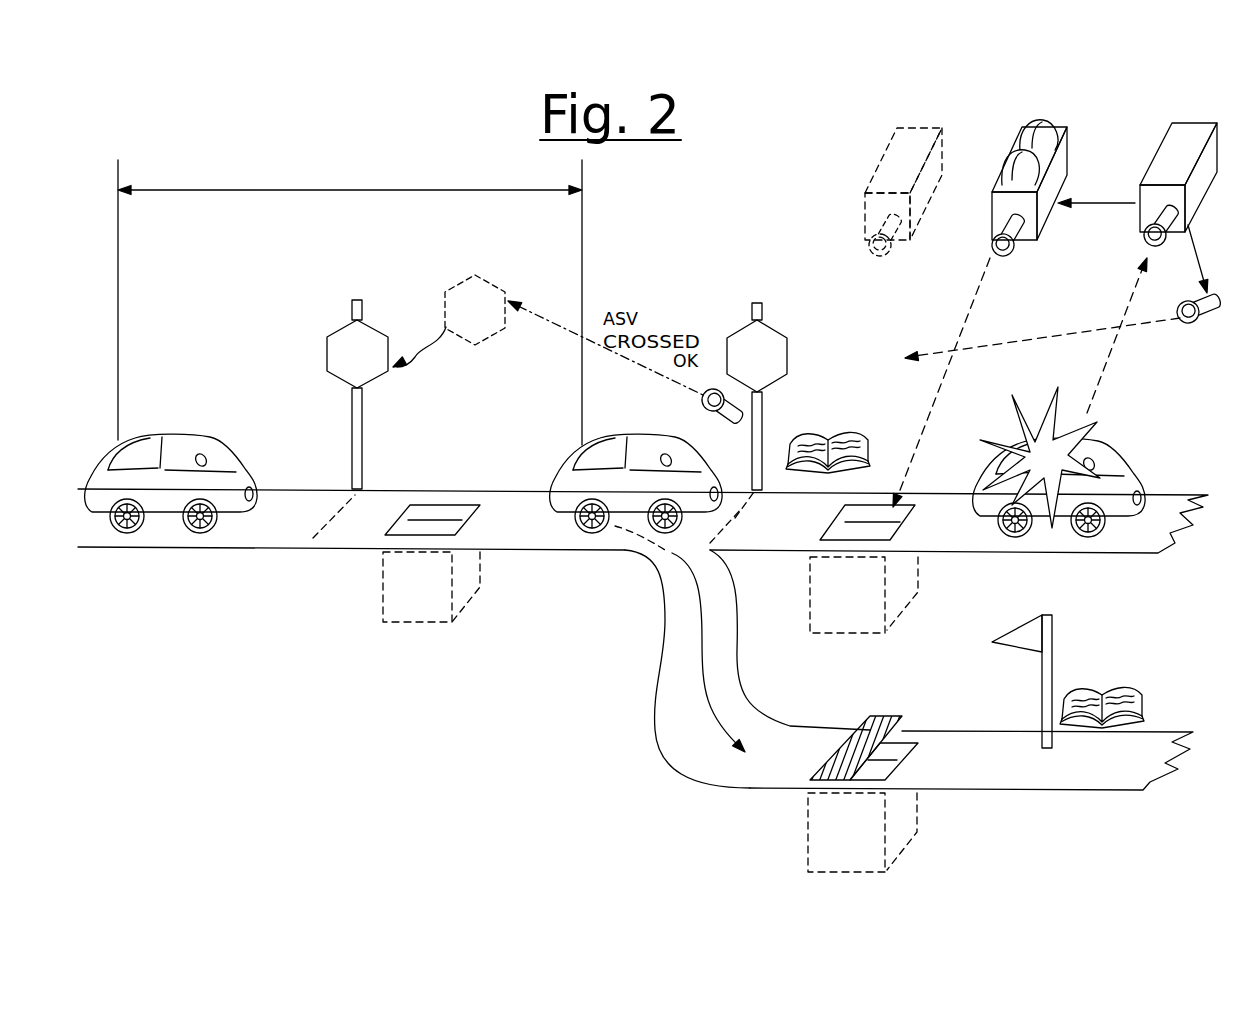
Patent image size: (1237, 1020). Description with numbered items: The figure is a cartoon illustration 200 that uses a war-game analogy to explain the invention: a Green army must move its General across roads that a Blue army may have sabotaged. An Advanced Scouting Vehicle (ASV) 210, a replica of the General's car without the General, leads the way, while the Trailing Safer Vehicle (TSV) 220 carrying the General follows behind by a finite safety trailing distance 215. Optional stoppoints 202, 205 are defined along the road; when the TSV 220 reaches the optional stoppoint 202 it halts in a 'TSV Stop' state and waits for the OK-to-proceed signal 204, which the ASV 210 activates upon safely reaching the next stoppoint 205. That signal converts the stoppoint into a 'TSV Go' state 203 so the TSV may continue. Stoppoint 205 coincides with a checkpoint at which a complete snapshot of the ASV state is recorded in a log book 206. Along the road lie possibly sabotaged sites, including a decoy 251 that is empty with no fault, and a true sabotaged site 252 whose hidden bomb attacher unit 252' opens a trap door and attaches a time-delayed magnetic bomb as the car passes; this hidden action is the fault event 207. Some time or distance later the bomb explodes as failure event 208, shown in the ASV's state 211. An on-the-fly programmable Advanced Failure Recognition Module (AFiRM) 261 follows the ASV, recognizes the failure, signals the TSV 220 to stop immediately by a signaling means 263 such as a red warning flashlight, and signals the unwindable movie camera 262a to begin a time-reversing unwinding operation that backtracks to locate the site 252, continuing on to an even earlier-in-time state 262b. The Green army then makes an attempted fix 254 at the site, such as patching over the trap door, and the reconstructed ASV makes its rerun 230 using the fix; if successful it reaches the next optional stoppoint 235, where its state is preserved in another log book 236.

The cartoon illustration 200 is at (642, 188).
The optional stoppoint 202 is at (333, 472).
The TSV Go state 203 is at (482, 277).
The OK-to-proceed signal 204 is at (736, 419).
The optional stoppoint with ASV state preservation 205 is at (739, 350).
The log book 206 is at (828, 416).
The fault event 207 is at (882, 507).
The failure event 208 is at (1045, 410).
The Advanced Scouting Vehicle (ASV) 210 is at (640, 438).
The ASV2 state 211 is at (1115, 481).
The safety trailing distance 215 is at (345, 193).
The Trailing Safer Vehicle (TSV) 220 is at (165, 433).
The rerun 230 is at (697, 618).
The next optional stoppoint 235 is at (1050, 657).
The log book 236 is at (1102, 672).
The decoy site 251 is at (413, 625).
The sabotaged site 252 is at (864, 619).
The bomb attacher unit 252' is at (903, 832).
The attempted fix 254 is at (883, 715).
The Advanced Failure Recognition Module (AFiRM) 261 is at (1153, 152).
The unwindable movie camera (unwinder unit) 262a is at (983, 153).
The earlier-in-time unwinder state 262b is at (878, 163).
The signaling means 263 is at (1203, 327).